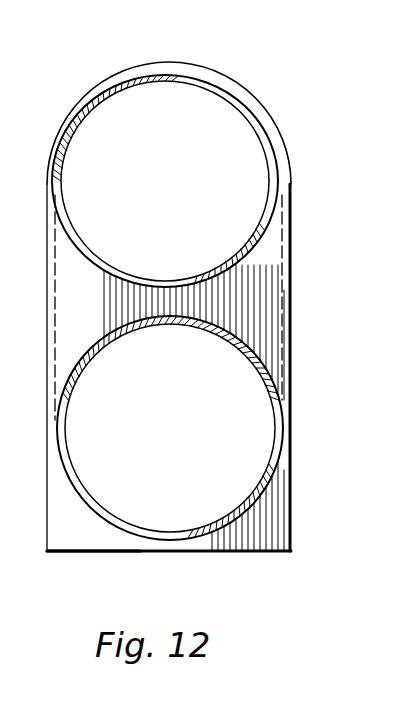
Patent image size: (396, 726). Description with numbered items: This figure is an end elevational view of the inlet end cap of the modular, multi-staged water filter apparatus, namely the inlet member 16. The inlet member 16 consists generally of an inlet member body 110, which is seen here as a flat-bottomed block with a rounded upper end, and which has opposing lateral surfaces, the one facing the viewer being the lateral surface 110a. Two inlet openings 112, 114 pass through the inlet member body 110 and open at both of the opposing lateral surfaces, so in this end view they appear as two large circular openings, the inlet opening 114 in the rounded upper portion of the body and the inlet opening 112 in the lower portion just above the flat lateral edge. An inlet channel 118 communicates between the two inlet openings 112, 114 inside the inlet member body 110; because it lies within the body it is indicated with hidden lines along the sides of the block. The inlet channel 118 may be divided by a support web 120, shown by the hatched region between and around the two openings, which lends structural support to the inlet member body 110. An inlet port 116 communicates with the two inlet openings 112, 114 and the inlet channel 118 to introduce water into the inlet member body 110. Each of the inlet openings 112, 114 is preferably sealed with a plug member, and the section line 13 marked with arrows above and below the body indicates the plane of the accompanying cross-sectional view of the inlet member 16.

The section line 13- 13 is at (140, 28).
The inlet member 16 is at (313, 152).
The inlet member body 110 is at (293, 522).
The lateral surface 110a is at (97, 535).
The inlet opening 112 is at (191, 448).
The inlet opening 114 is at (186, 193).
The inlet port 116 is at (188, 74).
The inlet channel 118 is at (282, 300).
The support web 120 is at (203, 300).